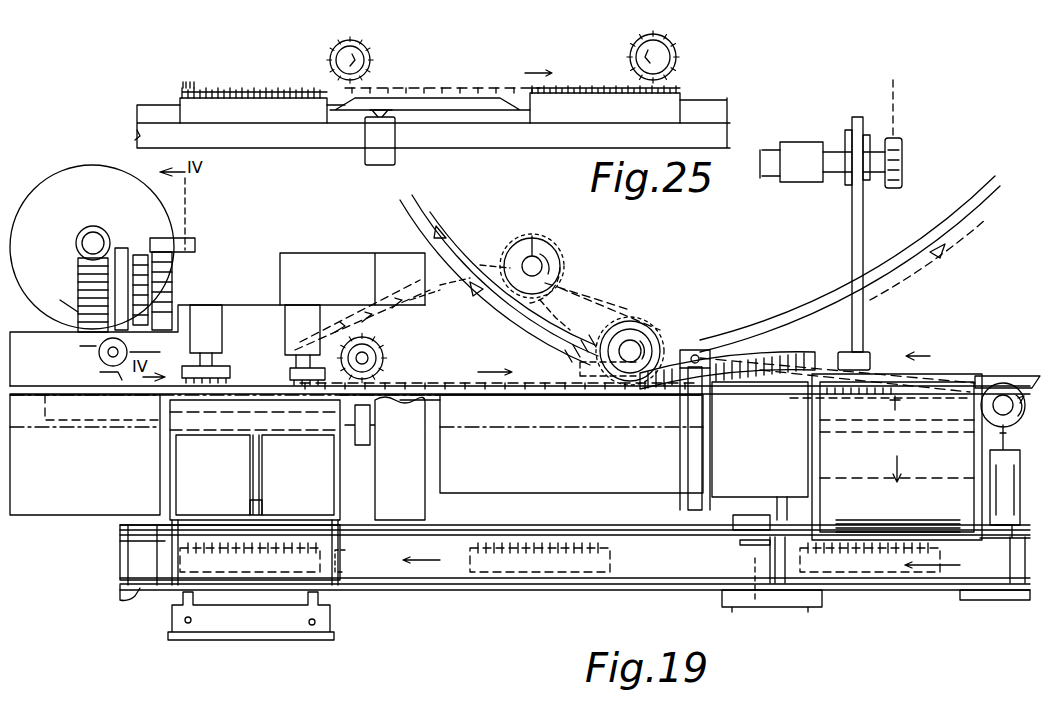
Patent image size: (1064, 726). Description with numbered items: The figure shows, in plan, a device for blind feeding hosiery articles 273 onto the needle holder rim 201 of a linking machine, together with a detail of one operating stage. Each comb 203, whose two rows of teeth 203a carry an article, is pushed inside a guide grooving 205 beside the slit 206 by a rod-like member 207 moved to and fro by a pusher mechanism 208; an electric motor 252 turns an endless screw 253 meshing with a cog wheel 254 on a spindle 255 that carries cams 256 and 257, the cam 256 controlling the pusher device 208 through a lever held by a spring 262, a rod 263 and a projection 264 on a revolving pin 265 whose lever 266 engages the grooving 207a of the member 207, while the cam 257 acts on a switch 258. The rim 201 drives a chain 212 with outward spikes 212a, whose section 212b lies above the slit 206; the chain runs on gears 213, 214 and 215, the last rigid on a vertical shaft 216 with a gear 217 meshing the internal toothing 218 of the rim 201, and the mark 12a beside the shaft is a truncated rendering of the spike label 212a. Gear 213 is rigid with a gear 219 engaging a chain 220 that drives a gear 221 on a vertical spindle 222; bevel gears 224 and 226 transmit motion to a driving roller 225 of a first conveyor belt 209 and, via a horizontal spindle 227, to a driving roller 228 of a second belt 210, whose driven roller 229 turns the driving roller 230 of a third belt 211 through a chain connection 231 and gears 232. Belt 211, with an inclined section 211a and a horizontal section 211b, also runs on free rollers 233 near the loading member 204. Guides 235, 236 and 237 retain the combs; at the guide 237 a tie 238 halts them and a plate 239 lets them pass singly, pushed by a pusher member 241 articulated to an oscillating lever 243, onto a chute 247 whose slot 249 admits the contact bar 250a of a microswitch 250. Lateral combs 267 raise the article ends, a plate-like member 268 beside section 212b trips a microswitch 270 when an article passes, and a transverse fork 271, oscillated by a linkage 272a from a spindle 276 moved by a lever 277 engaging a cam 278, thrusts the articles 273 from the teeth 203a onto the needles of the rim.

In FIG. 19, the guide wheel 12a is at (490, 255).
In FIG. 19, the needle holder rim 201 is at (960, 236).
In FIG. 25, the comb 203 is at (262, 112).
In FIG. 19, the comb 203 is at (896, 402).
In FIG. 25, the teeth 203a is at (208, 76).
In FIG. 19, the loading member 204 is at (346, 631).
In FIG. 19, the guide grooving 205 is at (12, 410).
In FIG. 19, the slit 206 is at (60, 350).
In FIG. 19, the rod-like member 207 is at (76, 402).
In FIG. 19, the grooving 207a is at (120, 400).
In FIG. 19, the pusher mechanism 208 is at (142, 216).
In FIG. 19, the first conveyor belt 209 is at (885, 385).
In FIG. 19, the second conveyor belt 210 is at (958, 584).
In FIG. 19, the third conveyor belt 211 is at (454, 592).
In FIG. 19, the inclined section 211a is at (630, 572).
In FIG. 19, the horizontal section 211b is at (142, 562).
In FIG. 25, the chain 212 is at (378, 34).
In FIG. 19, the chain 212 is at (436, 290).
In FIG. 25, the spikes 212a is at (445, 84).
In FIG. 19, the spikes 212a is at (588, 290).
In FIG. 25, the section of the chain 212b is at (510, 80).
In FIG. 19, the section of the chain 212b is at (436, 384).
In FIG. 19, the gear 213 is at (648, 302).
In FIG. 25, the gear 214 is at (372, 60).
In FIG. 19, the gear 214 is at (380, 344).
In FIG. 19, the gear 215 is at (558, 262).
In FIG. 19, the vertical shaft 216 is at (535, 255).
In FIG. 19, the gear 217 is at (574, 292).
In FIG. 19, the toothing 218 is at (536, 310).
In FIG. 25, the gear 219 is at (680, 56).
In FIG. 19, the gear 219 is at (652, 334).
In FIG. 19, the chain 220 is at (704, 350).
In FIG. 19, the gear 221 is at (998, 374).
In FIG. 19, the vertical spindle 222 is at (1008, 388).
In FIG. 19, the first bevel gear 224 is at (975, 402).
In FIG. 19, the driving roller 225 is at (822, 452).
In FIG. 19, the second bevel gear 226 is at (984, 378).
In FIG. 19, the horizontal spindle 227 is at (982, 520).
In FIG. 19, the driving roller 228 is at (1010, 600).
In FIG. 19, the driven roller 229 is at (808, 600).
In FIG. 19, the driving roller 230 is at (737, 608).
In FIG. 19, the chain connection 231 is at (770, 497).
In FIG. 19, the gears 232 is at (790, 490).
In FIG. 19, the rollers 233 is at (136, 592).
In FIG. 19, the guide 235 is at (918, 584).
In FIG. 19, the guide 236 is at (558, 590).
In FIG. 19, the guide 237 is at (258, 592).
In FIG. 19, the tie 238 is at (160, 542).
In FIG. 19, the plate 239 is at (215, 502).
In FIG. 19, the pusher member 241 is at (212, 642).
In FIG. 19, the oscillating lever 243 is at (248, 642).
In FIG. 19, the chute 247 is at (190, 480).
In FIG. 19, the slot 249 is at (250, 454).
In FIG. 19, the microswitch 250 is at (262, 500).
In FIG. 19, the contact bar 250a is at (268, 466).
In FIG. 19, the electric motor 252 is at (60, 166).
In FIG. 19, the endless screw 253 is at (84, 226).
In FIG. 19, the cog wheel 254 is at (76, 248).
In FIG. 19, the spindle 255 is at (78, 270).
In FIG. 19, the cam 256 is at (78, 312).
In FIG. 19, the cam 257 is at (172, 310).
In FIG. 19, the switch 258 is at (135, 262).
In FIG. 19, the spring 262 is at (150, 290).
In FIG. 19, the rod 263 is at (215, 240).
In FIG. 19, the projection 264 is at (165, 365).
In FIG. 19, the revolving pin 265 is at (92, 350).
In FIG. 19, the lever 266 is at (102, 370).
In FIG. 19, the lateral combs 267 is at (292, 368).
In FIG. 25, the plate-like member 268 is at (492, 112).
In FIG. 19, the plate-like member 268 is at (466, 392).
In FIG. 25, the microswitch 270 is at (380, 160).
In FIG. 19, the microswitch 270 is at (370, 442).
In FIG. 19, the transverse fork 271 is at (704, 452).
In FIG. 19, the linkage 272a is at (690, 470).
In FIG. 25, the articles for linking 273 is at (596, 88).
In FIG. 19, the spindle 276 is at (746, 358).
In FIG. 19, the lever 277 is at (850, 218).
In FIG. 19, the cam 278 is at (852, 140).